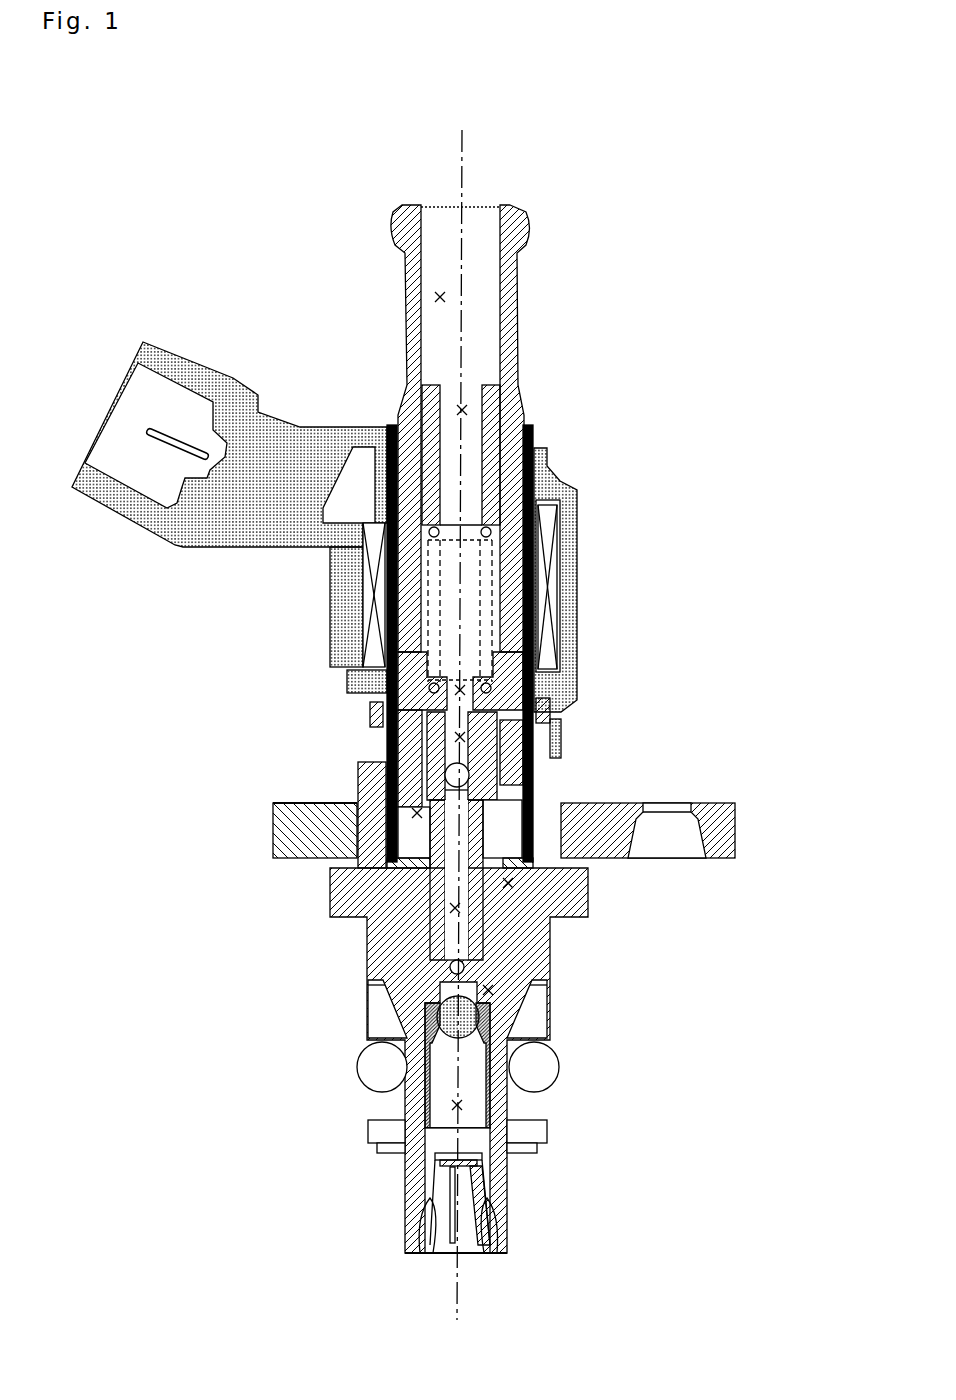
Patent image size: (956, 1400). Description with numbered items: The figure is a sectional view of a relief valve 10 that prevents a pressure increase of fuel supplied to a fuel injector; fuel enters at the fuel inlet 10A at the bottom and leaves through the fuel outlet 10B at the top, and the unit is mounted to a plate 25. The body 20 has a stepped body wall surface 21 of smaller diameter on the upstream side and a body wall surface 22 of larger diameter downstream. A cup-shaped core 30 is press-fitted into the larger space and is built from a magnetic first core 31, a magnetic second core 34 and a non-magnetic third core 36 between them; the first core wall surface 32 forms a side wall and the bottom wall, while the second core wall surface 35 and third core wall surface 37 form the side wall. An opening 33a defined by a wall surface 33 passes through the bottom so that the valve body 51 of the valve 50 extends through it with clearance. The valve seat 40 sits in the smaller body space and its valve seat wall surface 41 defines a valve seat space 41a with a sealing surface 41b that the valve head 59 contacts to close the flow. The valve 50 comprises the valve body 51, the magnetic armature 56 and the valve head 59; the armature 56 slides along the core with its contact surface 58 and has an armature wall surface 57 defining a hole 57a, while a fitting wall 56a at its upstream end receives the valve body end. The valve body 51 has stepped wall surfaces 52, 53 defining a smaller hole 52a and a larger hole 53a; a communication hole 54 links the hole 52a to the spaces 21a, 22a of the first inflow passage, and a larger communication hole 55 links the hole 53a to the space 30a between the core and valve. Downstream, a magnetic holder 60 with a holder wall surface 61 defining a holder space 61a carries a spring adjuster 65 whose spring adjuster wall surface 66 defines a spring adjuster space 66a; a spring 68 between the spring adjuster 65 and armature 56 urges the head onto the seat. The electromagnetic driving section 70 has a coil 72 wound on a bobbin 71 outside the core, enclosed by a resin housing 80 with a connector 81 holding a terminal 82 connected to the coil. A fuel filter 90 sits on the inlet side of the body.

The relief valve 10 is at (555, 182).
The fuel inlet 10A is at (442, 1258).
The fuel outlet 10B is at (447, 205).
The body 20 is at (535, 932).
The body wall surface 21 is at (520, 965).
The space 21a is at (492, 990).
The body wall surface 22 is at (518, 882).
The space 22a is at (522, 900).
The plate 25 is at (702, 822).
The core 30 is at (546, 417).
The space 30a is at (358, 800).
The first core 31 is at (380, 754).
The first core wall surface 32 is at (362, 768).
The wall surface 33 is at (290, 829).
The opening 33a is at (290, 806).
The second core 34 is at (536, 528).
The second core wall surface 35 is at (505, 574).
The third core 36 is at (537, 632).
The third core wall surface 37 is at (540, 588).
The valve seat 40 is at (402, 1020).
The valve seat wall surface 41 is at (488, 1112).
The valve seat space 41a is at (452, 1105).
The sealing surface 41b is at (487, 1032).
The valve 50 is at (503, 803).
The valve body 51 is at (332, 880).
The valve body wall surface 52 is at (440, 963).
The hole 52a is at (450, 908).
The valve body wall surface 53 is at (522, 756).
The hole 53a is at (540, 722).
The communication hole 54 is at (450, 968).
The communication hole 55 is at (470, 773).
The armature 56 is at (530, 645).
The fitting wall 56a is at (558, 736).
The armature wall surface 57 is at (400, 722).
The hole 57a is at (442, 684).
The contact surface 58 is at (502, 692).
The valve head 59 is at (462, 1018).
The holder 60 is at (402, 372).
The holder wall surface 61 is at (410, 340).
The holder space 61a is at (436, 297).
The spring adjuster 65 is at (565, 482).
The spring adjuster wall surface 66 is at (533, 432).
The spring adjuster space 66a is at (465, 408).
The spring 68 is at (437, 625).
The electromagnetic driving section 70 is at (258, 628).
The bobbin 71 is at (348, 505).
The coil 72 is at (372, 602).
The housing 80 is at (245, 527).
The connector 81 is at (125, 497).
The terminal 82 is at (150, 430).
The fuel filter 90 is at (468, 1232).